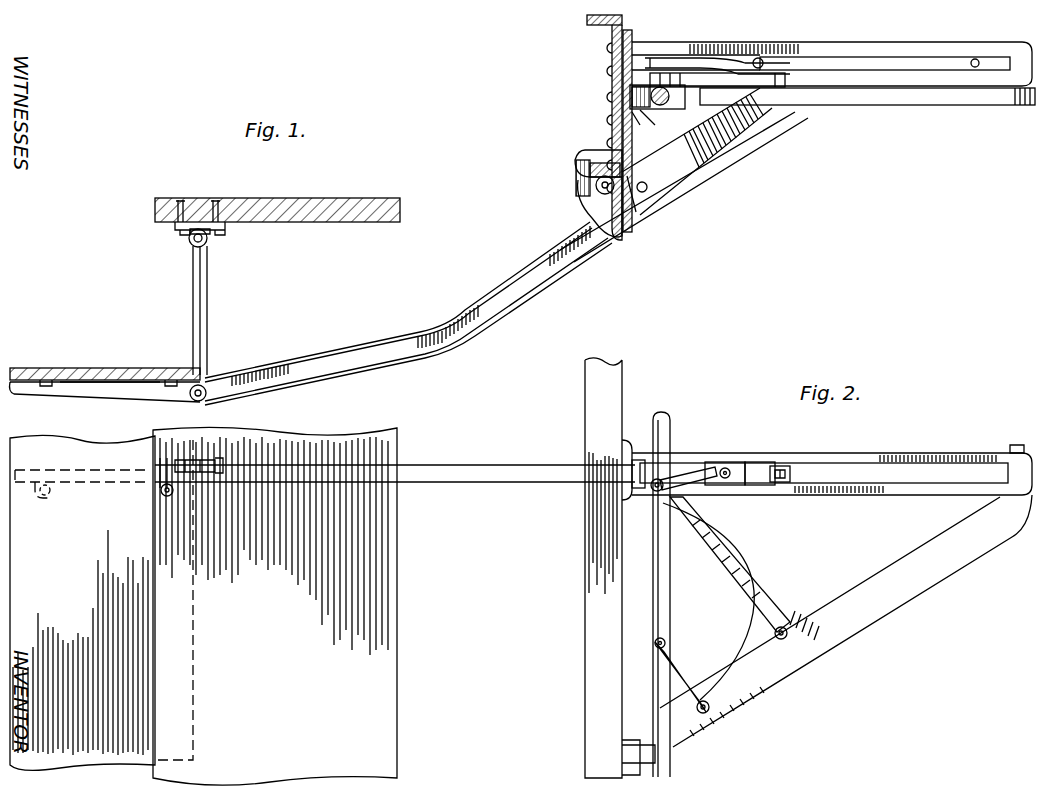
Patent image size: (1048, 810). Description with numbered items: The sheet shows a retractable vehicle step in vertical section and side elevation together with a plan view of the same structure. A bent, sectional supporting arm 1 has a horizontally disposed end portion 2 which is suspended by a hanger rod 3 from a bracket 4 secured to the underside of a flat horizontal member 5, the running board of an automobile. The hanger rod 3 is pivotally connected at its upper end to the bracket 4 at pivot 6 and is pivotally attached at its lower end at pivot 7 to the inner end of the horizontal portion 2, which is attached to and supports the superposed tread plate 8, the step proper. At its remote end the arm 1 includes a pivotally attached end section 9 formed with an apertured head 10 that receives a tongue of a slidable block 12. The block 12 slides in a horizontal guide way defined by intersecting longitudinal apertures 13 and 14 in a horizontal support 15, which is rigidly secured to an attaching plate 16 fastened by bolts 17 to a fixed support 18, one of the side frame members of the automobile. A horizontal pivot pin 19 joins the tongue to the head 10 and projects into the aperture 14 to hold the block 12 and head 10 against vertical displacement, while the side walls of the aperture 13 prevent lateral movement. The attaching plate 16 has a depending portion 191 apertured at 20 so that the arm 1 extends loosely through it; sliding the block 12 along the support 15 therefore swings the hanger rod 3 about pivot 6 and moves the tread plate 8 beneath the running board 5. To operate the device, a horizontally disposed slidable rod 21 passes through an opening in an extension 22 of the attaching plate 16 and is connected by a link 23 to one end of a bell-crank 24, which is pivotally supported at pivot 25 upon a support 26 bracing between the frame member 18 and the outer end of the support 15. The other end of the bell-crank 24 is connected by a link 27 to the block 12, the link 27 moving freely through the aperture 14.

In FIG. 1, the supporting arm 1 is at (487, 297).
In FIG. 2, the supporting arm 1 is at (514, 483).
In FIG. 1, the horizontally disposed end portion 2 is at (113, 398).
In FIG. 1, the hanger rod 3 is at (208, 318).
In FIG. 1, the bracket 4 is at (209, 232).
In FIG. 2, the bracket 4 is at (227, 455).
In FIG. 1, the flat horizontal member 5 is at (282, 206).
In FIG. 2, the flat horizontal member 5 is at (378, 662).
In FIG. 1, the pivot 6 is at (192, 246).
In FIG. 1, the pivot 7 is at (206, 390).
In FIG. 1, the tread plate 8 is at (121, 370).
In FIG. 1, the end section 9 is at (694, 147).
In FIG. 1, the head 10 is at (768, 58).
In FIG. 2, the head 10 is at (790, 476).
In FIG. 2, the slidable block 12 is at (742, 468).
In FIG. 2, the aperture 13 is at (890, 493).
In FIG. 1, the aperture 14 is at (980, 60).
In FIG. 1, the horizontal support 15 is at (866, 46).
In FIG. 2, the horizontal support 15 is at (832, 462).
In FIG. 1, the attaching plate 16 is at (628, 58).
In FIG. 1, the bolts 17 is at (608, 47).
In FIG. 1, the fixed support 18 is at (622, 68).
In FIG. 2, the fixed support 18 is at (585, 657).
In FIG. 1, the horizontal pivot pin 19 is at (800, 62).
In FIG. 1, the depending portion 191 is at (578, 186).
In FIG. 1, the aperture 20 is at (598, 200).
In FIG. 2, the slidable rod 21 is at (668, 612).
In FIG. 1, the extension 22 is at (640, 120).
In FIG. 2, the link 23 is at (676, 660).
In FIG. 1, the bell-crank 24 is at (776, 88).
In FIG. 2, the bell-crank 24 is at (762, 590).
In FIG. 1, the pivot 25 is at (803, 80).
In FIG. 2, the pivot 25 is at (797, 644).
In FIG. 1, the support 26 is at (890, 96).
In FIG. 2, the support 26 is at (860, 586).
In FIG. 2, the link 27 is at (705, 473).